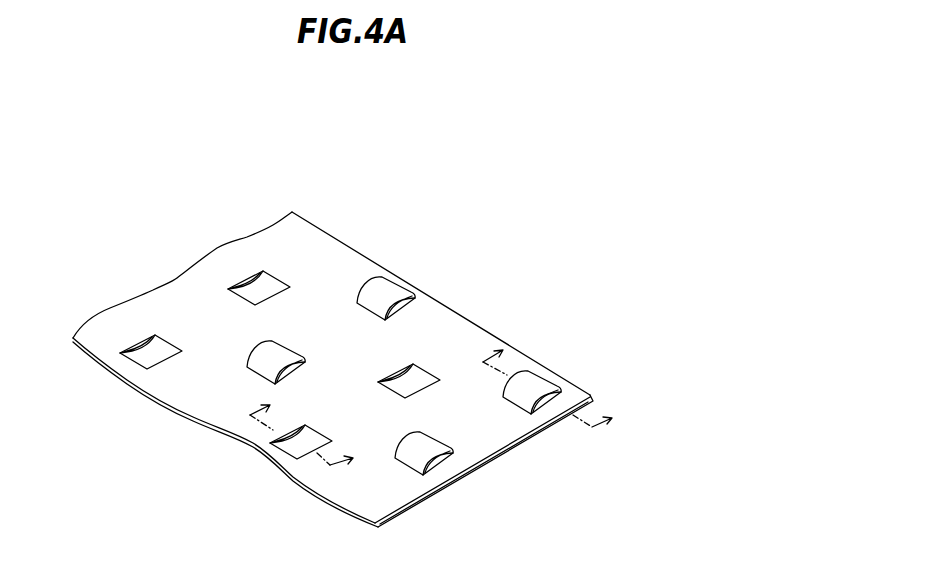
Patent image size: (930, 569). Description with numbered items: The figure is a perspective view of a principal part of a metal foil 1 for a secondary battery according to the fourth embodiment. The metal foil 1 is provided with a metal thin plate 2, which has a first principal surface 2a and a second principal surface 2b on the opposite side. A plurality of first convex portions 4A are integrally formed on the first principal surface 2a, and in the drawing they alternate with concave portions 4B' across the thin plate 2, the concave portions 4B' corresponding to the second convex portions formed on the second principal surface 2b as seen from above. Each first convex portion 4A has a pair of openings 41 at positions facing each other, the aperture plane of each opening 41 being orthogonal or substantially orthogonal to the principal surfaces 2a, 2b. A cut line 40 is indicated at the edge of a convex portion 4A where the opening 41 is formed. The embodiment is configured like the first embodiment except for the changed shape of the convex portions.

The metal foil 1 is at (463, 174).
The metal thin plate 2 is at (473, 303).
The first principal surface 2a is at (342, 248).
The second principal surface 2b is at (497, 457).
The first convex portion 4A is at (398, 283).
The concave portion 4B' is at (245, 359).
The cut line 40 is at (563, 392).
The opening 41 is at (548, 395).